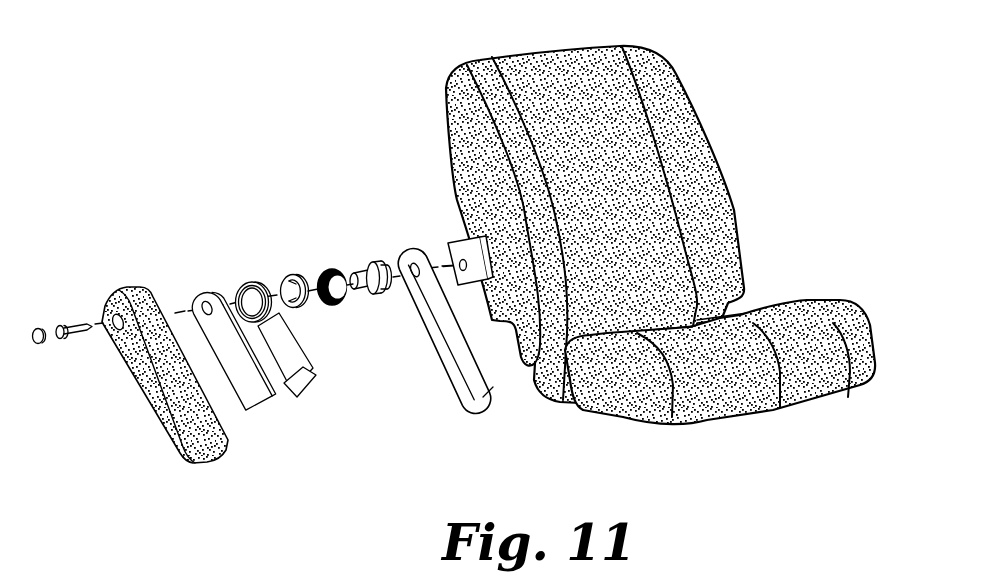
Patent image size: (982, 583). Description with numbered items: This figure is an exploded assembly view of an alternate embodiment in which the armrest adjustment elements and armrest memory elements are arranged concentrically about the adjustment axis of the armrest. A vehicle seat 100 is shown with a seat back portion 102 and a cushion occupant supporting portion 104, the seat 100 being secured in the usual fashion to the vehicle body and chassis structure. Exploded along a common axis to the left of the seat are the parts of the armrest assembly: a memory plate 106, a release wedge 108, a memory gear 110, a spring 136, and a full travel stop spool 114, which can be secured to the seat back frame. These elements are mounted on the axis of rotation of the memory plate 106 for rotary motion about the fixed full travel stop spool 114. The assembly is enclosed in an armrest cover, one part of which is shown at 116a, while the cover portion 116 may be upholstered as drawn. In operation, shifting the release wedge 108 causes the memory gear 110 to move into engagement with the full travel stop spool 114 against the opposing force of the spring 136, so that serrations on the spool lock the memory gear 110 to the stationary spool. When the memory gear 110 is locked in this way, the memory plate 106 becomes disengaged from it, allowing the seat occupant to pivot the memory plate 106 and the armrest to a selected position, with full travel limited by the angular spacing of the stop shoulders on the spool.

The vehicle seat 100 is at (722, 124).
The seat back portion 102 is at (735, 198).
The cushion occupant supporting portion 104 is at (815, 298).
The memory plate 106 is at (194, 302).
The release wedge 108 is at (252, 282).
The memory gear 110 is at (293, 275).
The spring 136 is at (327, 269).
The full travel stop spool 114 is at (371, 262).
The armrest cover portion 116 is at (145, 395).
The armrest cover 116a is at (457, 383).